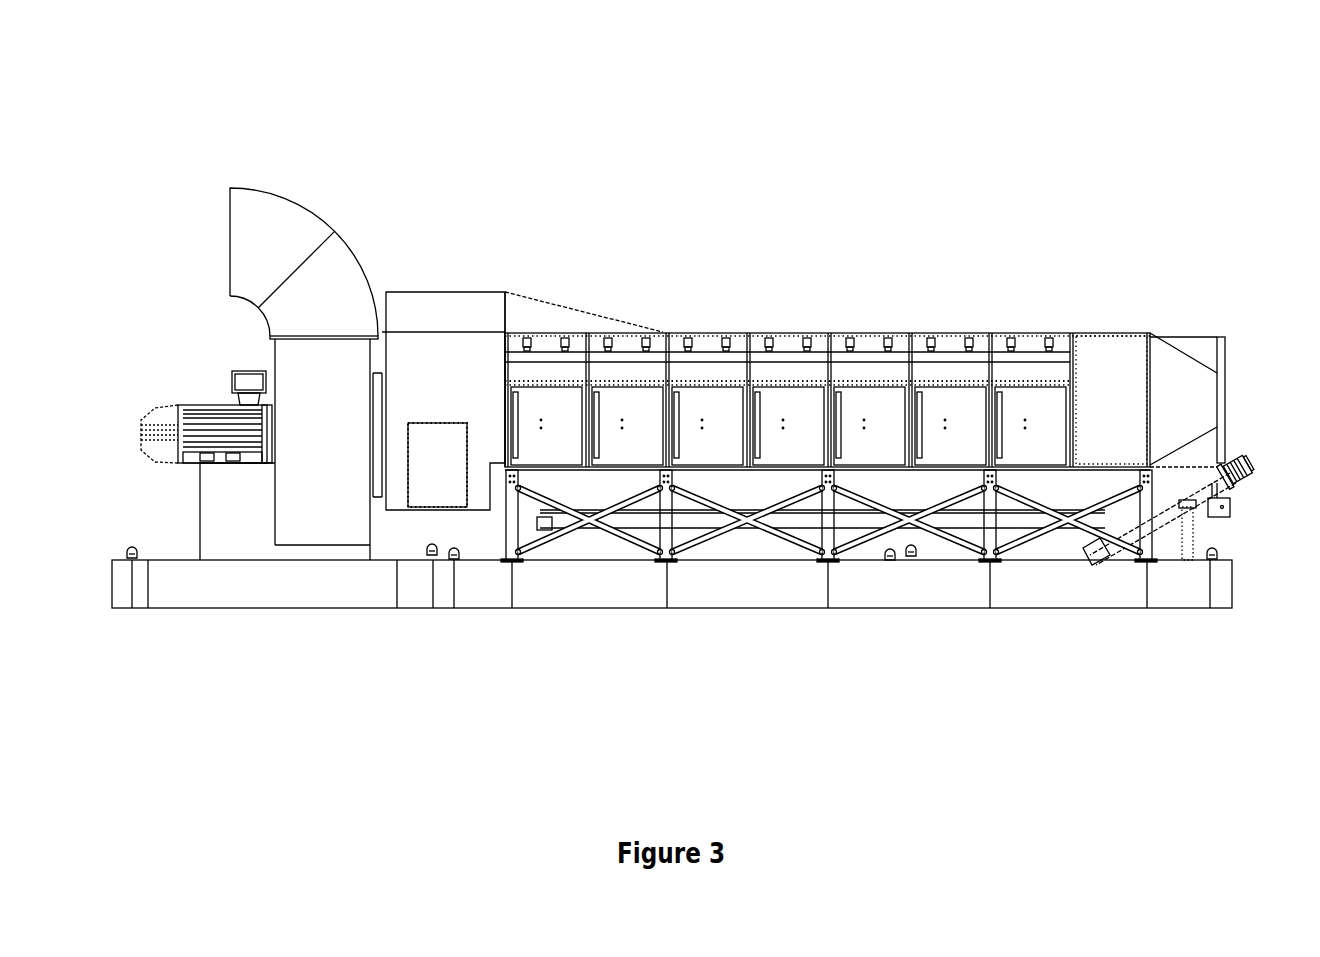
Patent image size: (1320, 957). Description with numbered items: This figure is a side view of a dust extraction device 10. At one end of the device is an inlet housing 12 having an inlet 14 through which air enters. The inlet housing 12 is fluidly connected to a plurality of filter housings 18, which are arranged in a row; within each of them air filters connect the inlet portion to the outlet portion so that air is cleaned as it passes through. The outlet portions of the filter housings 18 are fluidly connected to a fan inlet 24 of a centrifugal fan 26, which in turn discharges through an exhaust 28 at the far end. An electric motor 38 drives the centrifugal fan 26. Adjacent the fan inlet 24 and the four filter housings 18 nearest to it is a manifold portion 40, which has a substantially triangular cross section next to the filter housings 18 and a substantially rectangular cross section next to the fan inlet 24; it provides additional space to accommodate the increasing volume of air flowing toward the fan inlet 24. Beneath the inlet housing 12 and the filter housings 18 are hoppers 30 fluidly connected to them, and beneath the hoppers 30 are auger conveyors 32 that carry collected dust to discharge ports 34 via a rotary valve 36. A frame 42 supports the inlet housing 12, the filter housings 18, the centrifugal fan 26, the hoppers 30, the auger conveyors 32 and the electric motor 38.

The dust extraction device 10 is at (1100, 132).
The inlet housing 12 is at (1161, 303).
The inlet 14 is at (1197, 345).
The filter housings 18 is at (633, 402).
The fan inlet 24 is at (479, 455).
The centrifugal fan 26 is at (340, 518).
The exhaust 28 is at (284, 233).
The hoppers 30 is at (596, 492).
The auger conveyors 32 is at (640, 525).
The discharge ports 34 is at (1231, 506).
The rotary valve 36 is at (1247, 455).
The electric motor 38 is at (162, 413).
The manifold portion 40 is at (523, 248).
The frame 42 is at (1045, 598).